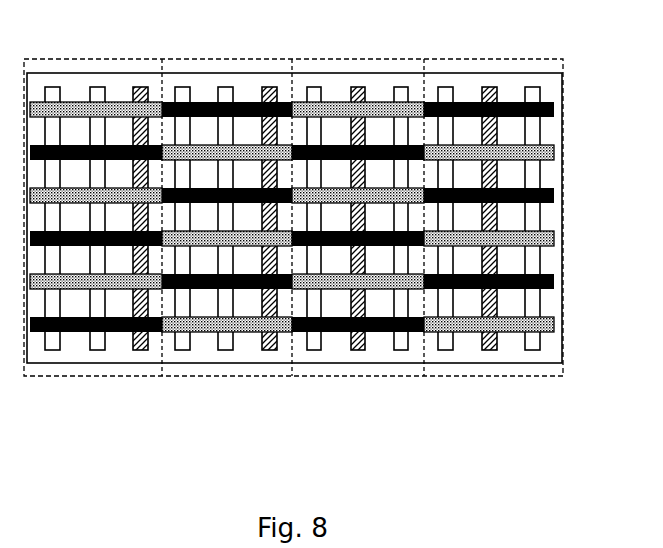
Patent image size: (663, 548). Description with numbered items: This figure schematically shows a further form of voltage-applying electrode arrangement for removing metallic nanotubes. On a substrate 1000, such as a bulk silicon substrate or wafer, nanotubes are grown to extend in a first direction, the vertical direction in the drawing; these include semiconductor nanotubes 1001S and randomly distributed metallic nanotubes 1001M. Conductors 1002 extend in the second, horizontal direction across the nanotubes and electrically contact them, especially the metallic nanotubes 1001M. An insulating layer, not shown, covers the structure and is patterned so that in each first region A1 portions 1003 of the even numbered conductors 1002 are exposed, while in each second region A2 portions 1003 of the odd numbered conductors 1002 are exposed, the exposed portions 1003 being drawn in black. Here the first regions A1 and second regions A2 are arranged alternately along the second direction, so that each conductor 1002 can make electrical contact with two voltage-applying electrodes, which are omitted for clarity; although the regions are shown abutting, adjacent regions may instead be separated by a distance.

The substrate 1000 is at (553, 347).
The metallic nanotubes 1001M is at (257, 42).
The semiconductor nanotubes 1001S is at (535, 83).
The conductors 1002 is at (553, 195).
The exposed portions of the conductors 1003 is at (553, 275).
The first region A1 is at (100, 380).
The second region A2 is at (228, 378).